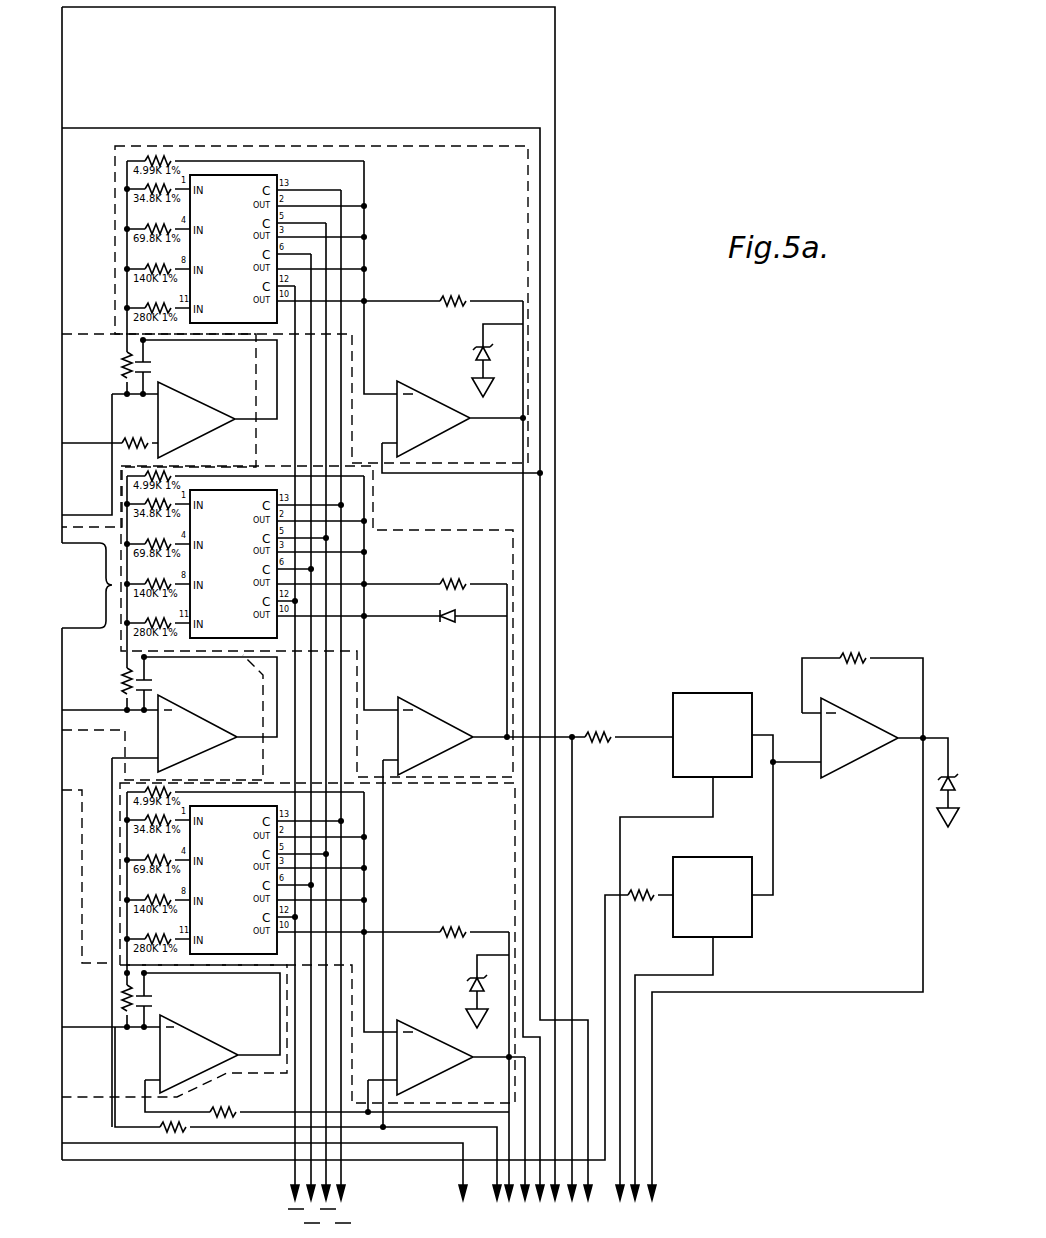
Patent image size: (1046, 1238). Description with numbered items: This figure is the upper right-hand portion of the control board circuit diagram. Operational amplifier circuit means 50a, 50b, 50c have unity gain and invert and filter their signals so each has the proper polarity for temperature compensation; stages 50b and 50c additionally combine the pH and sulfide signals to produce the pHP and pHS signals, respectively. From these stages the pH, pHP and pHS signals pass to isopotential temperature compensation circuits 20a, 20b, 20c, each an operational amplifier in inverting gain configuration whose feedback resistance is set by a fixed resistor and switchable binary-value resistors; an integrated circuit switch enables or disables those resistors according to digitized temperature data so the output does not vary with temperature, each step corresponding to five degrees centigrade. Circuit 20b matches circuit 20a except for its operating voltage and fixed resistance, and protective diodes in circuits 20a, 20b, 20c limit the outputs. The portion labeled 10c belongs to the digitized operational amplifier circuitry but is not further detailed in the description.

The digital-to-analog converter channel c 10c is at (521, 622).
The temperature compensation circuit 20a is at (329, 311).
The pHP temperature compensation circuit 20b is at (348, 796).
The temperature compensation circuit 20c is at (293, 949).
The operational amplifier circuit means 50a is at (169, 417).
The amplifier filter stage 50b is at (169, 875).
The amplifier filter stage 50c is at (285, 1028).